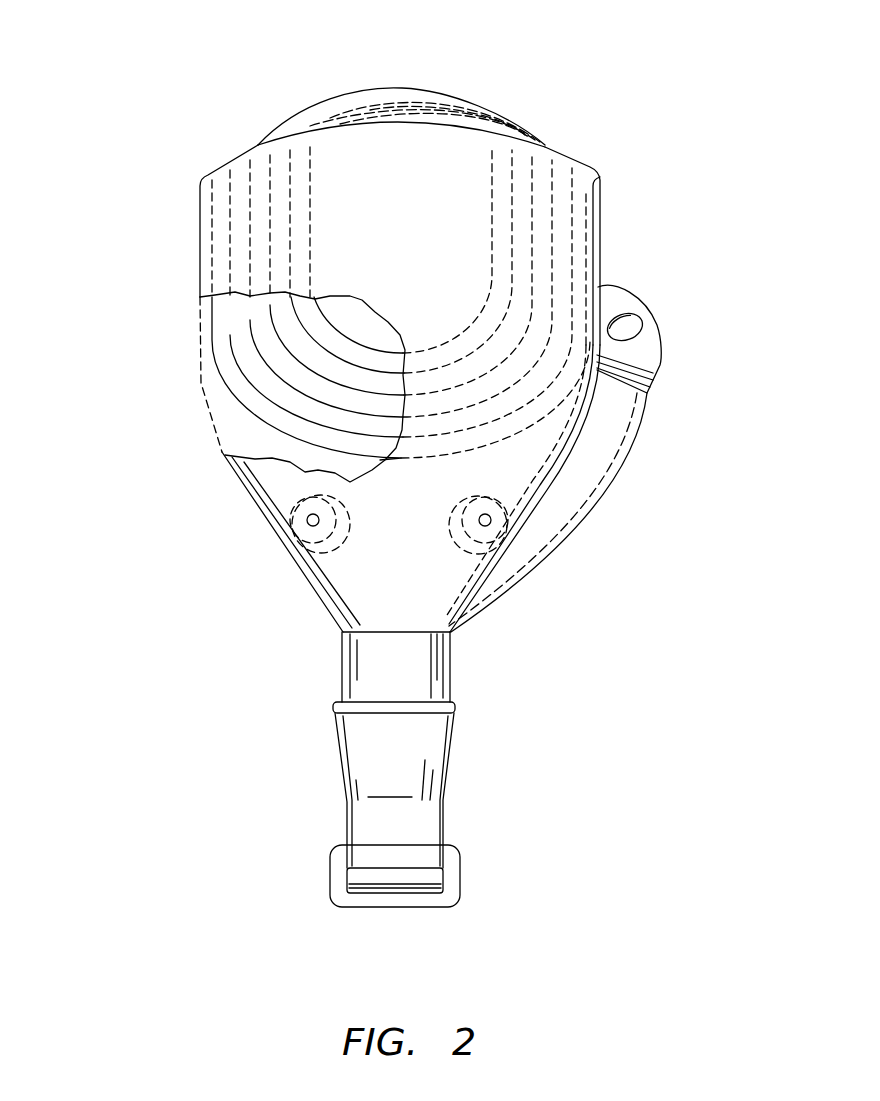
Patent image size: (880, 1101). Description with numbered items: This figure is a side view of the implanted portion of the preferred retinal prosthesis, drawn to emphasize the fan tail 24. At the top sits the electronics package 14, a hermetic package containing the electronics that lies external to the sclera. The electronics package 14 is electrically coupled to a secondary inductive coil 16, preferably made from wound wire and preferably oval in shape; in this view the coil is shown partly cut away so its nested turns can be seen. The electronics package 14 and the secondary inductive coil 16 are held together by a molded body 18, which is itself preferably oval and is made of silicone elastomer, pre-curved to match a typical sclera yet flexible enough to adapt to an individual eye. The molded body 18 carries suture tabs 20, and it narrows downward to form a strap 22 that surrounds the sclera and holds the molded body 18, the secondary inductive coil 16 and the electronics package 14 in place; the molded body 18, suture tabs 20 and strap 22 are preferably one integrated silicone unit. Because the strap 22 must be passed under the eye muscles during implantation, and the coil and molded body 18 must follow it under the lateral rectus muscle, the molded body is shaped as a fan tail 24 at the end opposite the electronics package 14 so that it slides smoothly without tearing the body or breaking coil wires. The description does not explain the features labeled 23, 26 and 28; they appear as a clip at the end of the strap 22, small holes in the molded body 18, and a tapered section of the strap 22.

The electronics package 14 is at (404, 88).
The secondary inductive coil 16 is at (200, 382).
The molded body 18 is at (601, 197).
The suture tabs 20 is at (660, 323).
The strap 22 is at (452, 675).
The buckle 23 is at (458, 902).
The fan tail 24 is at (133, 461).
The mounting holes 26 is at (327, 550).
The tapered connector 28 is at (452, 755).